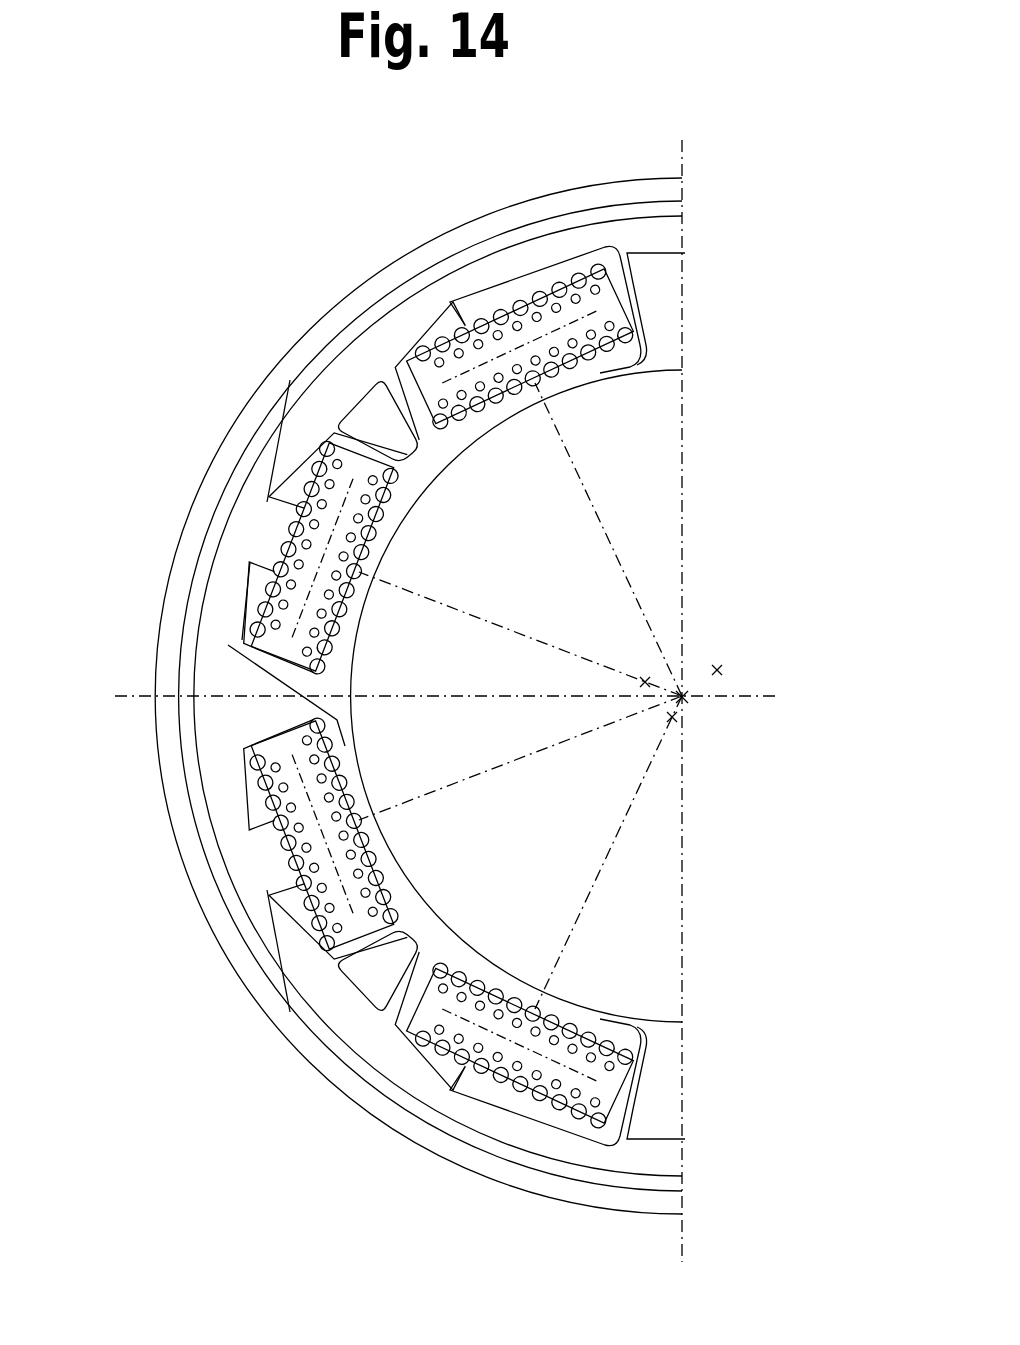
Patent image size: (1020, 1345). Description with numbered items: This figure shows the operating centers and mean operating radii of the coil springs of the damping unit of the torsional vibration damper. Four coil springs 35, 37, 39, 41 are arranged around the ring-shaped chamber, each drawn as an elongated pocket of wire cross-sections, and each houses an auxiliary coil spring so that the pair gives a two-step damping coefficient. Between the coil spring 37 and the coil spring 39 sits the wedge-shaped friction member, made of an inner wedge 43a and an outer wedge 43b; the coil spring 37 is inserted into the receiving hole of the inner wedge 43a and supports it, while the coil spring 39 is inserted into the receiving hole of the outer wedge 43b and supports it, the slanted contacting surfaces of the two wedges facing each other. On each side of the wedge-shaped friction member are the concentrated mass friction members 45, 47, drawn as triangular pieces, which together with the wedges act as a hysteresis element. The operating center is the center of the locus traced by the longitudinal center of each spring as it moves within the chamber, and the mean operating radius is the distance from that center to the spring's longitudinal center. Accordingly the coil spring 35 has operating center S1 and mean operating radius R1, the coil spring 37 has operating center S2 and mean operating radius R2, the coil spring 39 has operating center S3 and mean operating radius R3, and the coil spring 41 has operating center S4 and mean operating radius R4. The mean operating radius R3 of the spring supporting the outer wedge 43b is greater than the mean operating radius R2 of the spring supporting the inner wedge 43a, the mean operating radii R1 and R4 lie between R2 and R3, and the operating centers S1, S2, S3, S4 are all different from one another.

The coil spring 35 is at (507, 318).
The coil spring 37 is at (297, 528).
The coil spring 39 is at (285, 846).
The coil spring 41 is at (478, 1067).
The inner wedge 43a is at (245, 612).
The outer wedge 43b is at (232, 680).
The concentrated mass friction member 45 is at (382, 365).
The concentrated mass friction member 47 is at (345, 997).
The mean operating radius R1 is at (608, 539).
The mean operating radius R2 is at (520, 634).
The mean operating radius R3 is at (520, 758).
The mean operating radius R4 is at (608, 852).
The operating center S1 is at (700, 714).
The operating center S2 is at (631, 662).
The operating center S3 is at (733, 652).
The operating center S4 is at (649, 723).